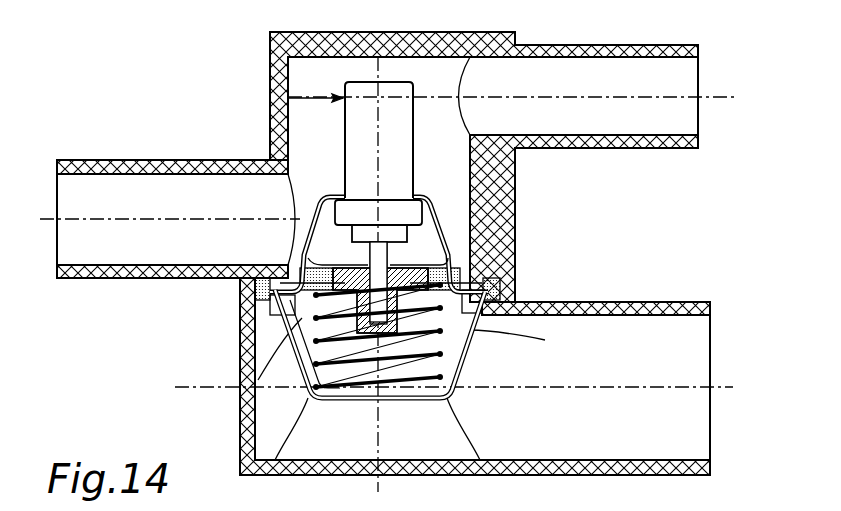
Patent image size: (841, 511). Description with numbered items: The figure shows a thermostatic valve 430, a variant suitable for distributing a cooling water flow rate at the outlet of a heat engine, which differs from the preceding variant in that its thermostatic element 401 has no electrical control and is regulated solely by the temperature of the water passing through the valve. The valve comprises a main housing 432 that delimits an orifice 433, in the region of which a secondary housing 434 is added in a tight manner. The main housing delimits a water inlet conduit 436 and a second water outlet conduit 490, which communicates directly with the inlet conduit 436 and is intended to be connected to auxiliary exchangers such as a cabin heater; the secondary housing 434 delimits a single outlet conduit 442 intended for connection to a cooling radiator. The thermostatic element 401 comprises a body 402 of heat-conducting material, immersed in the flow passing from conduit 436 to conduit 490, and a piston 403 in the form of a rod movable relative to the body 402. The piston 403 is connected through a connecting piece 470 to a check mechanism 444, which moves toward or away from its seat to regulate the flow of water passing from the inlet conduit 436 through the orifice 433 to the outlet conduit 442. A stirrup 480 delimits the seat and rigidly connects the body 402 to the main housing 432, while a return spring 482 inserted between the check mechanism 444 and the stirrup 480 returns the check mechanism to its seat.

The thermostatic element 401 is at (288, 98).
The body 402 is at (397, 140).
The piston 403 is at (295, 241).
The thermostatic valve 430 is at (176, 346).
The main housing 432 is at (515, 185).
The orifice 433 is at (515, 297).
The secondary housing 434 is at (682, 302).
The inlet conduit 436 is at (176, 219).
The outlet conduit 442 is at (677, 388).
The check mechanism 444 is at (305, 317).
The connecting piece 470 is at (457, 300).
The stirrup 480 is at (473, 352).
The return spring 482 is at (458, 378).
The second water outlet conduit 490 is at (667, 96).